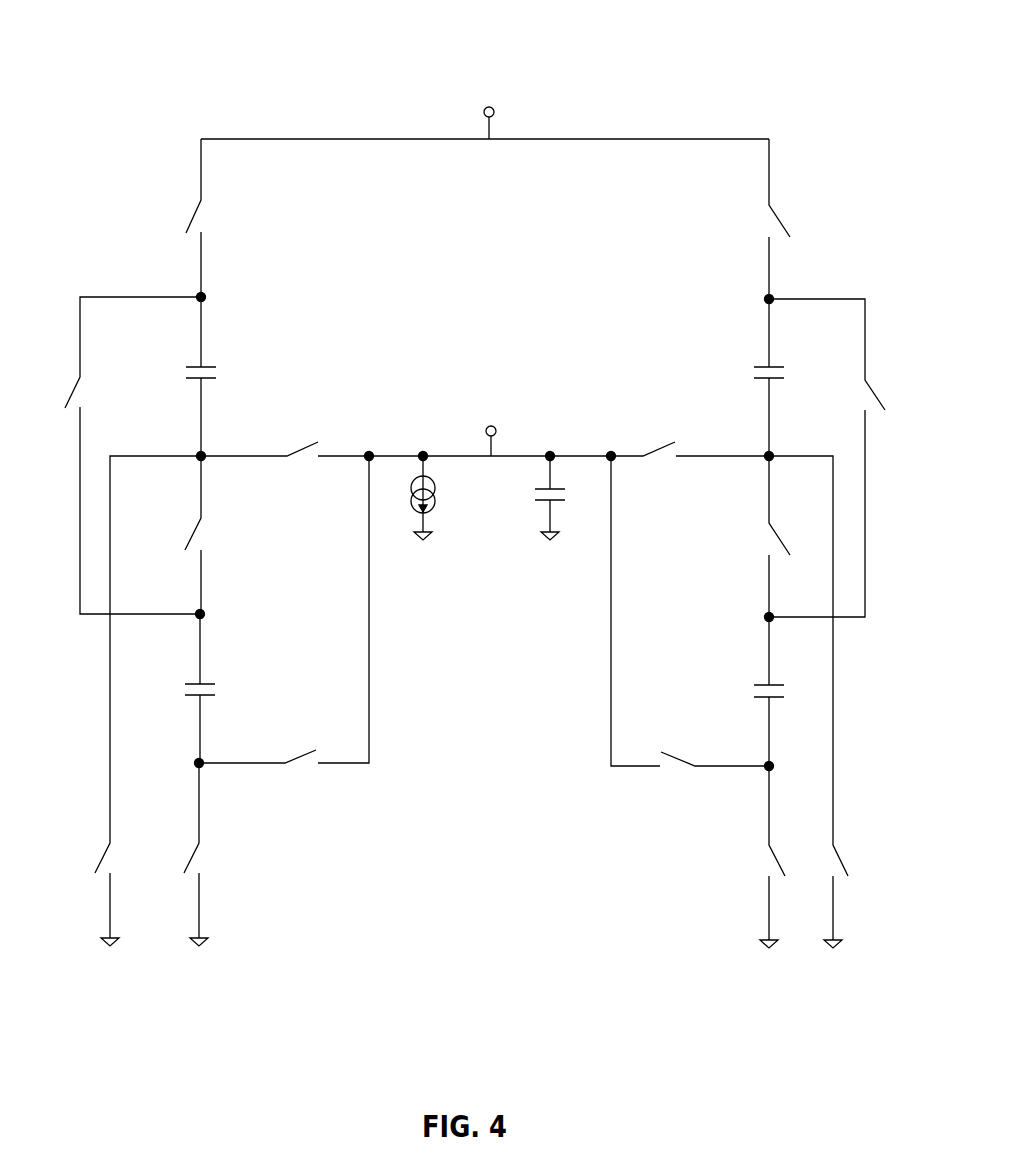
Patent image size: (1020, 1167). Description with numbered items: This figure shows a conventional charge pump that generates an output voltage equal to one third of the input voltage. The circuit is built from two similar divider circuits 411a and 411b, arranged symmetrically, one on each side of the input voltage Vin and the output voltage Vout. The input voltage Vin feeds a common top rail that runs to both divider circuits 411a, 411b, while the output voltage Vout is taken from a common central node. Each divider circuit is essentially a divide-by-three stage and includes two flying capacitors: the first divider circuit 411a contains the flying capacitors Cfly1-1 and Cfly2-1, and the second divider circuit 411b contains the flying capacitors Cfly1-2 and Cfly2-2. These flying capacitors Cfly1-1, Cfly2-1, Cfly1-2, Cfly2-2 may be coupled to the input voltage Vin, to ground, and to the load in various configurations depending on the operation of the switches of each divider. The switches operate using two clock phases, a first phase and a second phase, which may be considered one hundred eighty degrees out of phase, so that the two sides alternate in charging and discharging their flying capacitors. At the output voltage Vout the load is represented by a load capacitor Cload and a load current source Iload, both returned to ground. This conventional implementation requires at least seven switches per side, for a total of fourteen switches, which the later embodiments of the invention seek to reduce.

The divider circuit 411a is at (175, 98).
The divider circuit 411b is at (738, 100).
The flying capacitor Cfly1-1 is at (221, 376).
The flying capacitor Cfly2-1 is at (225, 692).
The flying capacitor Cfly1-2 is at (744, 376).
The flying capacitor Cfly2-2 is at (744, 693).
The load capacitor Cload is at (563, 498).
The load current source Iload is at (435, 498).
The input voltage Vin is at (489, 117).
The output voltage Vout is at (489, 432).